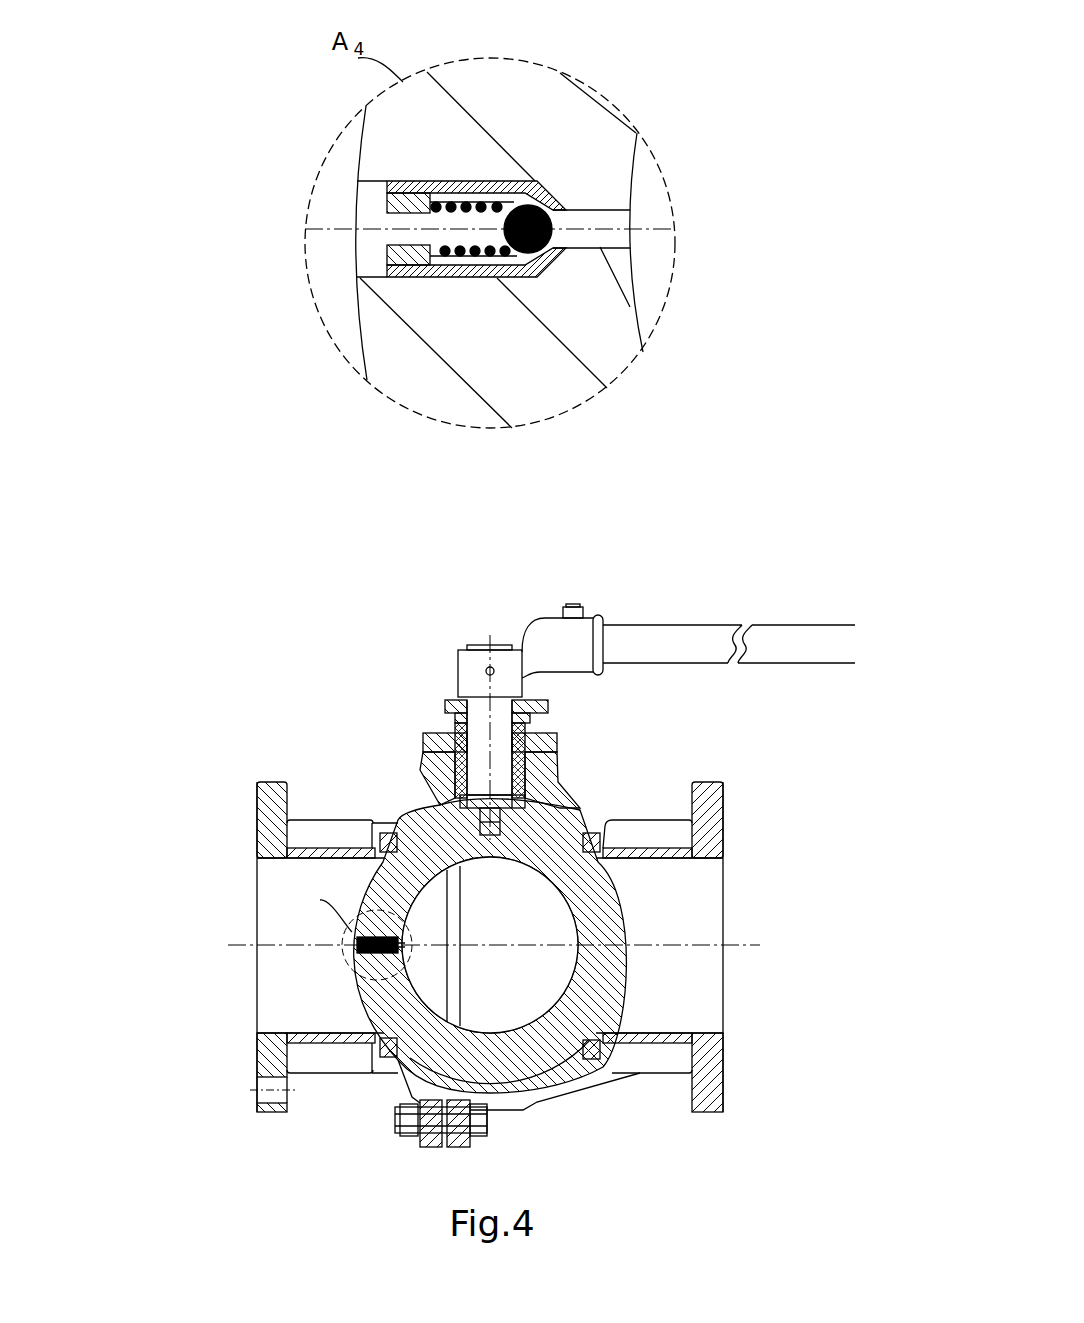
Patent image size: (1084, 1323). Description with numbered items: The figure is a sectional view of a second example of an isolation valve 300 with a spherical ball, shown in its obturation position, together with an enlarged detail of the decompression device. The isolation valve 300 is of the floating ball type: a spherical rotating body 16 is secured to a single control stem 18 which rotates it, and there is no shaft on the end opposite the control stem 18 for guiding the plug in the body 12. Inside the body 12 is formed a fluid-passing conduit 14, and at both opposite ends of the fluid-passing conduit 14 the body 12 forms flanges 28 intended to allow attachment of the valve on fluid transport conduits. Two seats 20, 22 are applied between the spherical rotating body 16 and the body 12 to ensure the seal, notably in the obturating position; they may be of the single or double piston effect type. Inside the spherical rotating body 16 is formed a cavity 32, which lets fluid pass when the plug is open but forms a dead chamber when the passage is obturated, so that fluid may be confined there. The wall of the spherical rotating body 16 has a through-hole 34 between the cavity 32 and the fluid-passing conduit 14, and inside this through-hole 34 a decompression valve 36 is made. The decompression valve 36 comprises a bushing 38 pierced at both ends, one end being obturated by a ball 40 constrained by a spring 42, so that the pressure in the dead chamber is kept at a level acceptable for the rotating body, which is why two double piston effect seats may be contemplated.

The isolation valve 300 is at (355, 617).
The body 12 is at (268, 800).
The fluid-passing conduit 14 is at (323, 207).
The spherical rotating body 16 is at (538, 92).
The control stem 18 is at (500, 770).
The seat 20 is at (378, 830).
The seat 22 is at (590, 830).
The flange 28 is at (720, 800).
The cavity 32 is at (655, 185).
The through-hole 34 is at (618, 237).
The decompression valve 36 is at (560, 286).
The bushing 38 is at (416, 185).
The ball 40 is at (556, 234).
The spring 42 is at (433, 242).